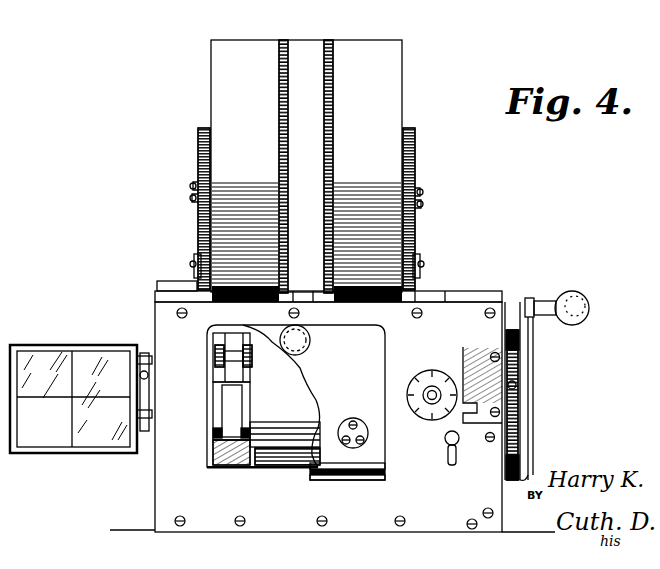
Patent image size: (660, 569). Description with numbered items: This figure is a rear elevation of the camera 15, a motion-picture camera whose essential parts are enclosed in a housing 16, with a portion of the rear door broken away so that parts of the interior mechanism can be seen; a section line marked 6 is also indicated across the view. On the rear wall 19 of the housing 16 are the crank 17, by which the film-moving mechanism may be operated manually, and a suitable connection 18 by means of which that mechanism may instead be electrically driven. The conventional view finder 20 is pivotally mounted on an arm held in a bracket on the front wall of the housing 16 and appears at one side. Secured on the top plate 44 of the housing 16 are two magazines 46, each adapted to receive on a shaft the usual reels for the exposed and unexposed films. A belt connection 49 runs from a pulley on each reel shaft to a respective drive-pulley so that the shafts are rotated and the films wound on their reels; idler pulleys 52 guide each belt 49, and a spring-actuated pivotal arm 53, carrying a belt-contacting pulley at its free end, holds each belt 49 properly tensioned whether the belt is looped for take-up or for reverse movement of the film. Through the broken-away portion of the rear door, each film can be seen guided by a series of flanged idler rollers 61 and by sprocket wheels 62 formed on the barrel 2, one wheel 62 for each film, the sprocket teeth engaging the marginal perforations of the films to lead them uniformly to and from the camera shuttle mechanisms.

The magazine 46 is at (345, 50).
The belt connection 49 is at (201, 133).
The spring-actuated pivotal arm 53 is at (195, 195).
The idler pulley 52 is at (200, 264).
The top plate 44 is at (157, 287).
The camera 15 is at (438, 275).
The housing 16 is at (508, 290).
The crank 17 is at (528, 390).
The connection 18 is at (428, 406).
The rear wall 19 is at (354, 402).
The barrel 2 is at (277, 438).
The flanged idler roller 61 is at (238, 352).
The sprocket wheel 62 is at (250, 430).
The view finder 20 is at (71, 345).
The section line 6- 6 is at (163, 568).